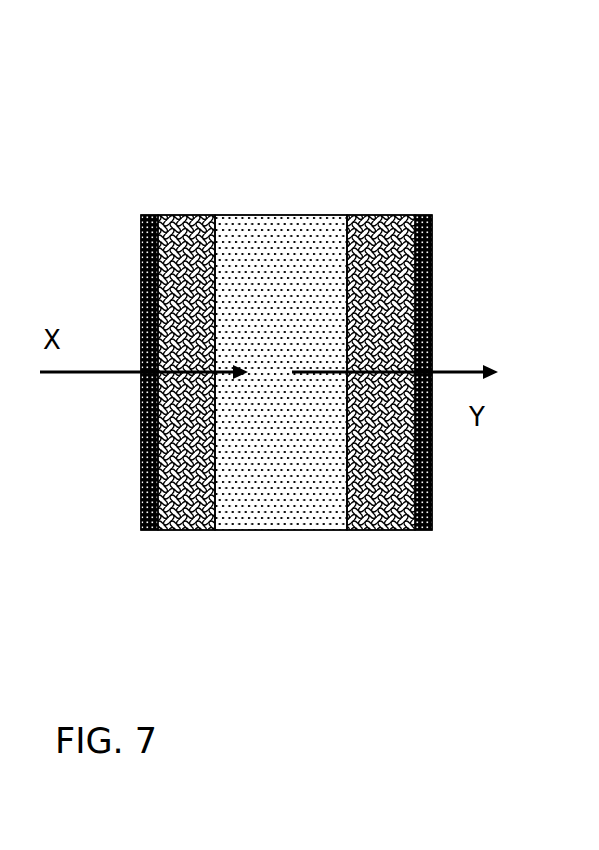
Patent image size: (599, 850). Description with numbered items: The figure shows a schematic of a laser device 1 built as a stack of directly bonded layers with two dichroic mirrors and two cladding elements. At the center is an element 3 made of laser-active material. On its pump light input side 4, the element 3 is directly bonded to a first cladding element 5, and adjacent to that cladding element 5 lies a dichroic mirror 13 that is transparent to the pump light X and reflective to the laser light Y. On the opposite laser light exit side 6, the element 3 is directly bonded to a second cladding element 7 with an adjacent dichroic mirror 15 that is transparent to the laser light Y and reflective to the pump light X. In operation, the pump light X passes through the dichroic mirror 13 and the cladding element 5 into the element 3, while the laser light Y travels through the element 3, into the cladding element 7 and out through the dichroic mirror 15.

The laser device 1 is at (332, 128).
The element made of laser-active material 3 is at (289, 228).
The pump light input side 4 is at (225, 478).
The first cladding element 5 is at (188, 228).
The laser light exit side 6 is at (358, 478).
The second cladding element 7 is at (379, 226).
The dichroic mirror 13 is at (150, 215).
The dichroic mirror 15 is at (420, 215).